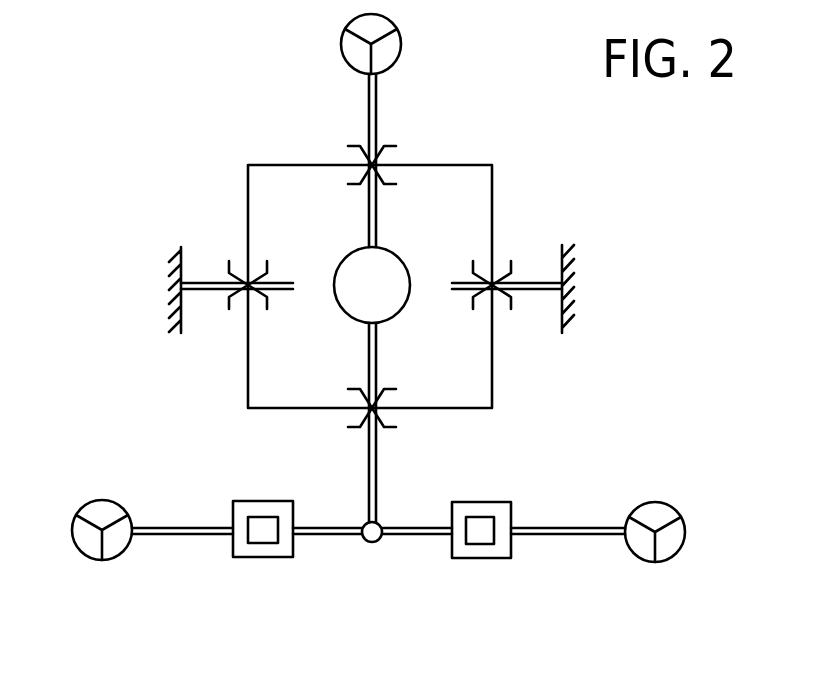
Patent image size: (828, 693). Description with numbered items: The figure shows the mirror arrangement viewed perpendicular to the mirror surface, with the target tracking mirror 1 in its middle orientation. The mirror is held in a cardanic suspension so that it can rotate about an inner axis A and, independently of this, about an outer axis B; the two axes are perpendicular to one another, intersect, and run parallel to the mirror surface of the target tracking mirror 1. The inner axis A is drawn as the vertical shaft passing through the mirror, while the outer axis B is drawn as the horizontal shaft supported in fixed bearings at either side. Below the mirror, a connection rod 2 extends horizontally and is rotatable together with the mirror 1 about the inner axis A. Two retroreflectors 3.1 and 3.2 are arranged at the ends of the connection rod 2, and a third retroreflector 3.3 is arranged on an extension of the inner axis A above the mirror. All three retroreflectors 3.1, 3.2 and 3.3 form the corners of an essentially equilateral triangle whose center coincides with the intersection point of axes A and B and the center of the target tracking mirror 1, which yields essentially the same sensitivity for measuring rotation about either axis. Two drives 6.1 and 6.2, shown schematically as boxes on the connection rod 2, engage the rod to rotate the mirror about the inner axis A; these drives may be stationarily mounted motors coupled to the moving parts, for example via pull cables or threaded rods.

The target tracking mirror 1 is at (397, 300).
The connection rod 2 is at (183, 526).
The retroreflector 3.1 is at (118, 560).
The retroreflector 3.2 is at (640, 563).
The retroreflector 3.3 is at (400, 48).
The drive 6.1 is at (265, 560).
The drive 6.2 is at (475, 560).
The inner axis A is at (367, 110).
The outer axis B is at (207, 281).